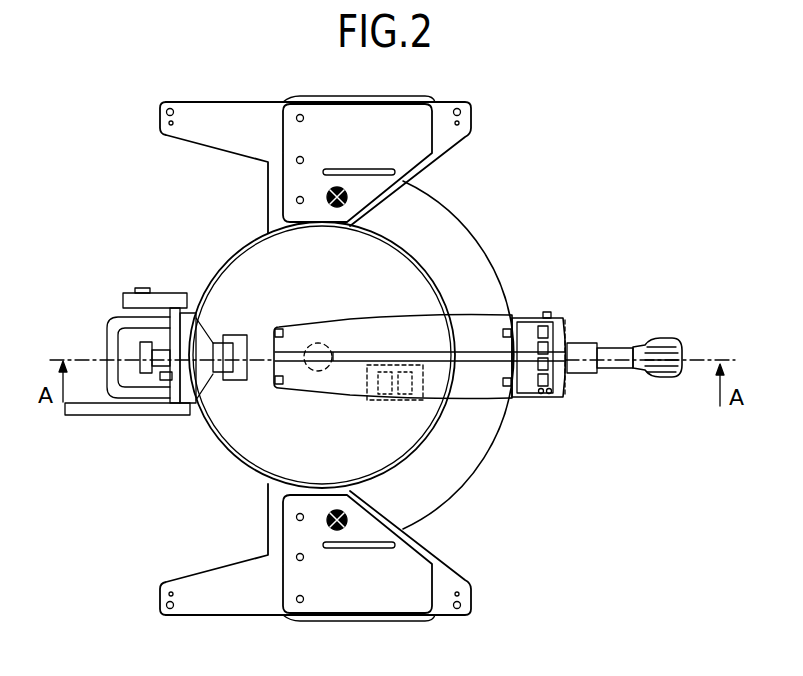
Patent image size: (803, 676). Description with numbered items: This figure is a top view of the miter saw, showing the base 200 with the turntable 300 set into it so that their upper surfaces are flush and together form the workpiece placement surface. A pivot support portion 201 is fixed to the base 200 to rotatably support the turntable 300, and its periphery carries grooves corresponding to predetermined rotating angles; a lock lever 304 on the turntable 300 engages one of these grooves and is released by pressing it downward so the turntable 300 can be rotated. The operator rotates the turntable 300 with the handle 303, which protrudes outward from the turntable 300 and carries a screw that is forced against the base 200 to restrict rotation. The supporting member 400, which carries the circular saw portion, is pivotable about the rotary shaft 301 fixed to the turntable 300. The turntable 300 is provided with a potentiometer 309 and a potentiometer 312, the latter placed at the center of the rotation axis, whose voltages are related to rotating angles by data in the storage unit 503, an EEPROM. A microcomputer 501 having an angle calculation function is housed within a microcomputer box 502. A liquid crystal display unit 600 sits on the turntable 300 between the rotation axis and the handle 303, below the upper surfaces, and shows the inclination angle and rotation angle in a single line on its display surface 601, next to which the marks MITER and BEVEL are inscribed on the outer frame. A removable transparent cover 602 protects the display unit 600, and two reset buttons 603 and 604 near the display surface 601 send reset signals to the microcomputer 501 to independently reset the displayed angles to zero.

The base 200 is at (471, 112).
The pivot support portion 201 is at (458, 247).
The turntable 300 is at (445, 298).
The rotary shaft 301 is at (192, 412).
The handle 303 is at (638, 345).
The lock lever 304 is at (581, 343).
The potentiometer 309 is at (223, 342).
The potentiometer 312 is at (318, 343).
The supporting member 400 is at (150, 415).
The microcomputer 501 is at (375, 365).
The microcomputer box 502 is at (355, 400).
The storage unit 503 is at (403, 370).
The display unit 600 is at (530, 317).
The display surface 601 is at (550, 316).
The transparent cover 602 is at (527, 400).
The reset button 603 is at (540, 400).
The reset button 604 is at (547, 405).